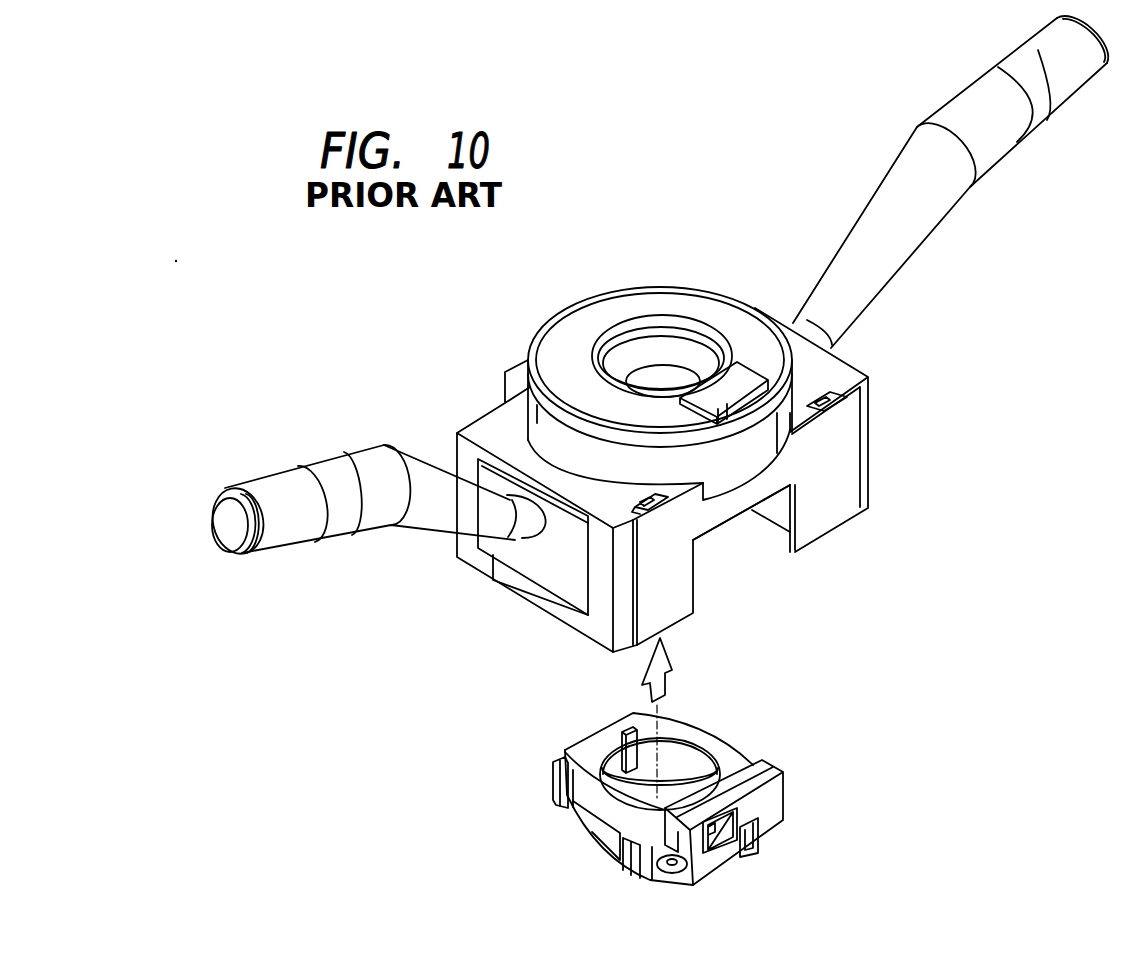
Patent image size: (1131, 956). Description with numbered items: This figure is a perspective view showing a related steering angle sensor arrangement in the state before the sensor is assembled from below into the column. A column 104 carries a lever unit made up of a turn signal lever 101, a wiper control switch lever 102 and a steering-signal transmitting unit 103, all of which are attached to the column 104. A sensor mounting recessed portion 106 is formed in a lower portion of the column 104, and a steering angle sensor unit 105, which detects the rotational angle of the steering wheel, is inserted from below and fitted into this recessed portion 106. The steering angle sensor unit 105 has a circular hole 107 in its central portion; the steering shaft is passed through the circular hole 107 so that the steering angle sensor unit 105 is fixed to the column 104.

The turn signal lever 101 is at (957, 110).
The wiper control switch lever 102 is at (287, 487).
The steering-signal transmitting unit 103 is at (597, 313).
The column 104 is at (840, 427).
The steering angle sensor unit 105 is at (727, 748).
The sensor mounting recessed portion 106 is at (777, 508).
The circular hole 107 is at (560, 773).